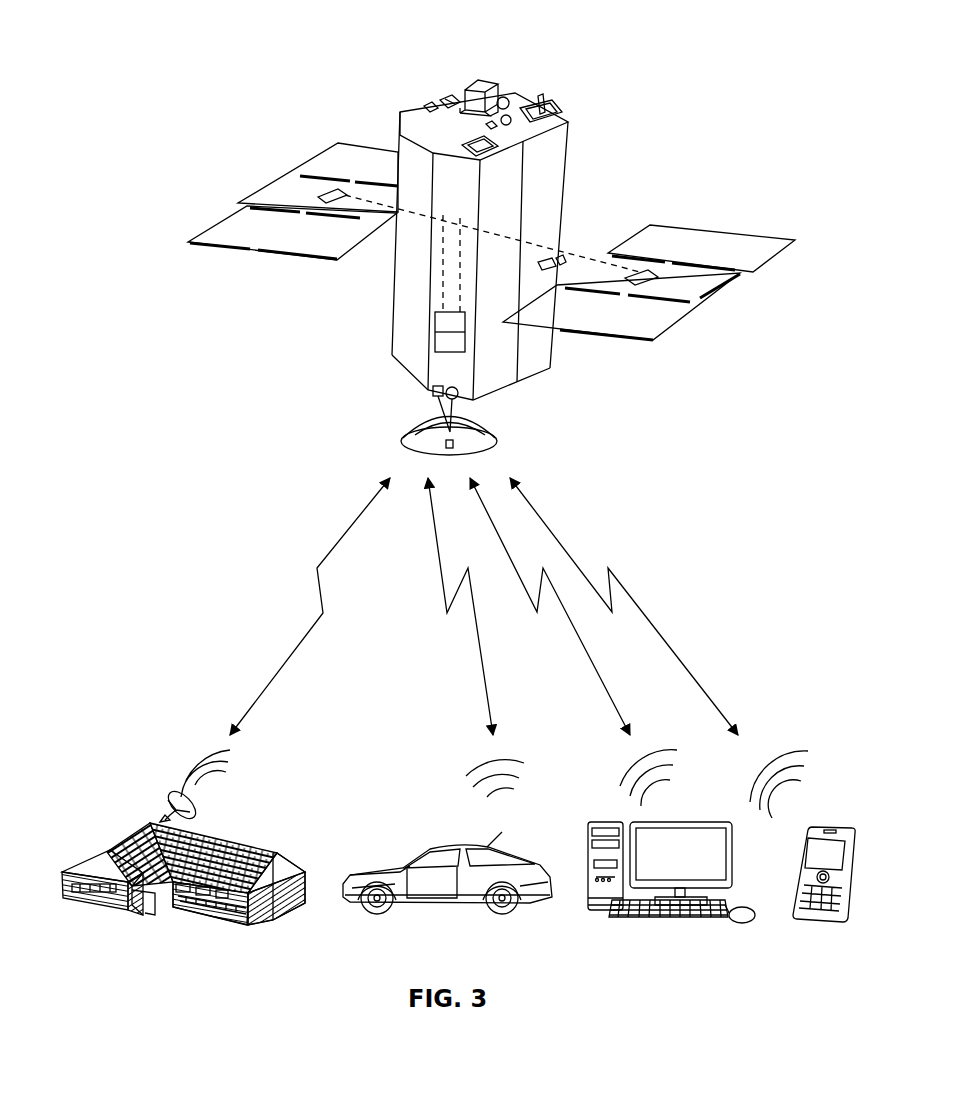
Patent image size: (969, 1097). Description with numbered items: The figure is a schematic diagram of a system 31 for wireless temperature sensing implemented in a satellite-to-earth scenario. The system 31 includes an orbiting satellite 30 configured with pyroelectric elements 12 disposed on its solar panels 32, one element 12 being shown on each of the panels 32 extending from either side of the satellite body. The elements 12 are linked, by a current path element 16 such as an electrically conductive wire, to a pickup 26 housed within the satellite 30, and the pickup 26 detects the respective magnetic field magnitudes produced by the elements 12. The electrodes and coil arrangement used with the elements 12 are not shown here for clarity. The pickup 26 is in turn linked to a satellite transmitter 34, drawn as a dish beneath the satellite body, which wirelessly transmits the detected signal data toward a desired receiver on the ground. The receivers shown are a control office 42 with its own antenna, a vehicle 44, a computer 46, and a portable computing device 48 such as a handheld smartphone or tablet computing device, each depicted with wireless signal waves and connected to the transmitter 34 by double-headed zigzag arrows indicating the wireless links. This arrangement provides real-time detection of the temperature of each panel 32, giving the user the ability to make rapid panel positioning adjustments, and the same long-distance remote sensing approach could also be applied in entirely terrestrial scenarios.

The pyroelectric element 12 is at (333, 192).
The current path element 16 is at (440, 272).
The pickup 26 is at (445, 320).
The orbiting satellite 30 is at (560, 98).
The system 31 is at (660, 42).
The solar panel 32 is at (305, 206).
The satellite transmitter 34 is at (453, 350).
The control office 42 is at (145, 785).
The vehicle 44 is at (407, 832).
The computer 46 is at (696, 806).
The portable computing device 48 is at (845, 792).